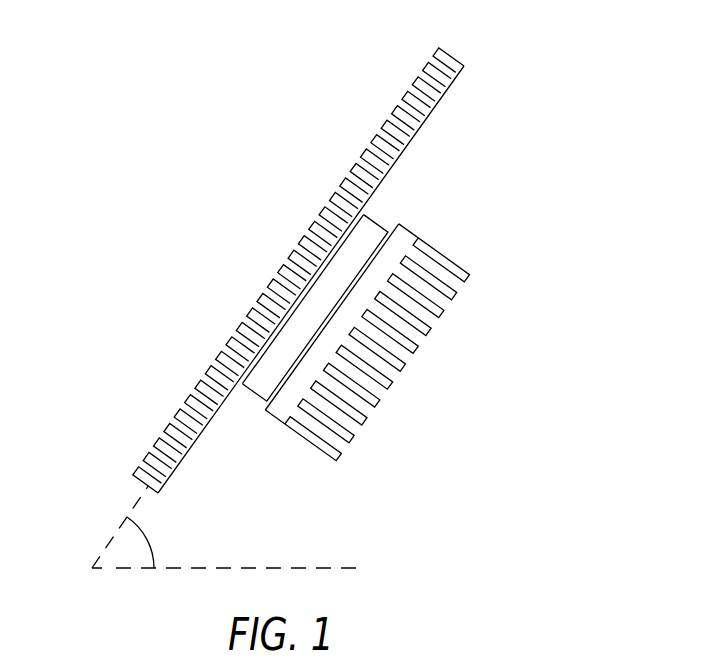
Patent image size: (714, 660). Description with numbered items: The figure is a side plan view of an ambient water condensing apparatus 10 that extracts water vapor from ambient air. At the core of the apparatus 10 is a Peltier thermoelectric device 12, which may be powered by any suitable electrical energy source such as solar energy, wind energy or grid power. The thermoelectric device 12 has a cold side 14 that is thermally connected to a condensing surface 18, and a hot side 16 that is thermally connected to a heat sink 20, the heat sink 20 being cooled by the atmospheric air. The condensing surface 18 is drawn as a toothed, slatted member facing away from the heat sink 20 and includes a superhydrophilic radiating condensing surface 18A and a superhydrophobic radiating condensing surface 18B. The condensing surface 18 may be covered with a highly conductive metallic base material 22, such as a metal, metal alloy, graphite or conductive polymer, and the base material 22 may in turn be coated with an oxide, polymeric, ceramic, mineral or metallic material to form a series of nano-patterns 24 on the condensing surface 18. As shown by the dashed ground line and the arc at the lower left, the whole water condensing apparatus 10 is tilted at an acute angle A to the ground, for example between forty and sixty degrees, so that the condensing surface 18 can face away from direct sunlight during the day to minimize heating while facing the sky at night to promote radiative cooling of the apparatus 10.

The ambient water condensing apparatus 10 is at (96, 165).
The Peltier thermoelectric device 12 is at (352, 256).
The cold side 14 is at (364, 215).
The hot side 16 is at (373, 260).
The condensing surface 18 is at (291, 263).
The superhydrophilic radiating condensing surface 18A is at (294, 220).
The superhydrophobic radiating condensing surface 18B is at (132, 444).
The heat sink 20 is at (414, 346).
The highly conductive metallic base material 22 is at (366, 152).
The nano-patterns 24 is at (263, 298).
The acute angle A is at (147, 540).